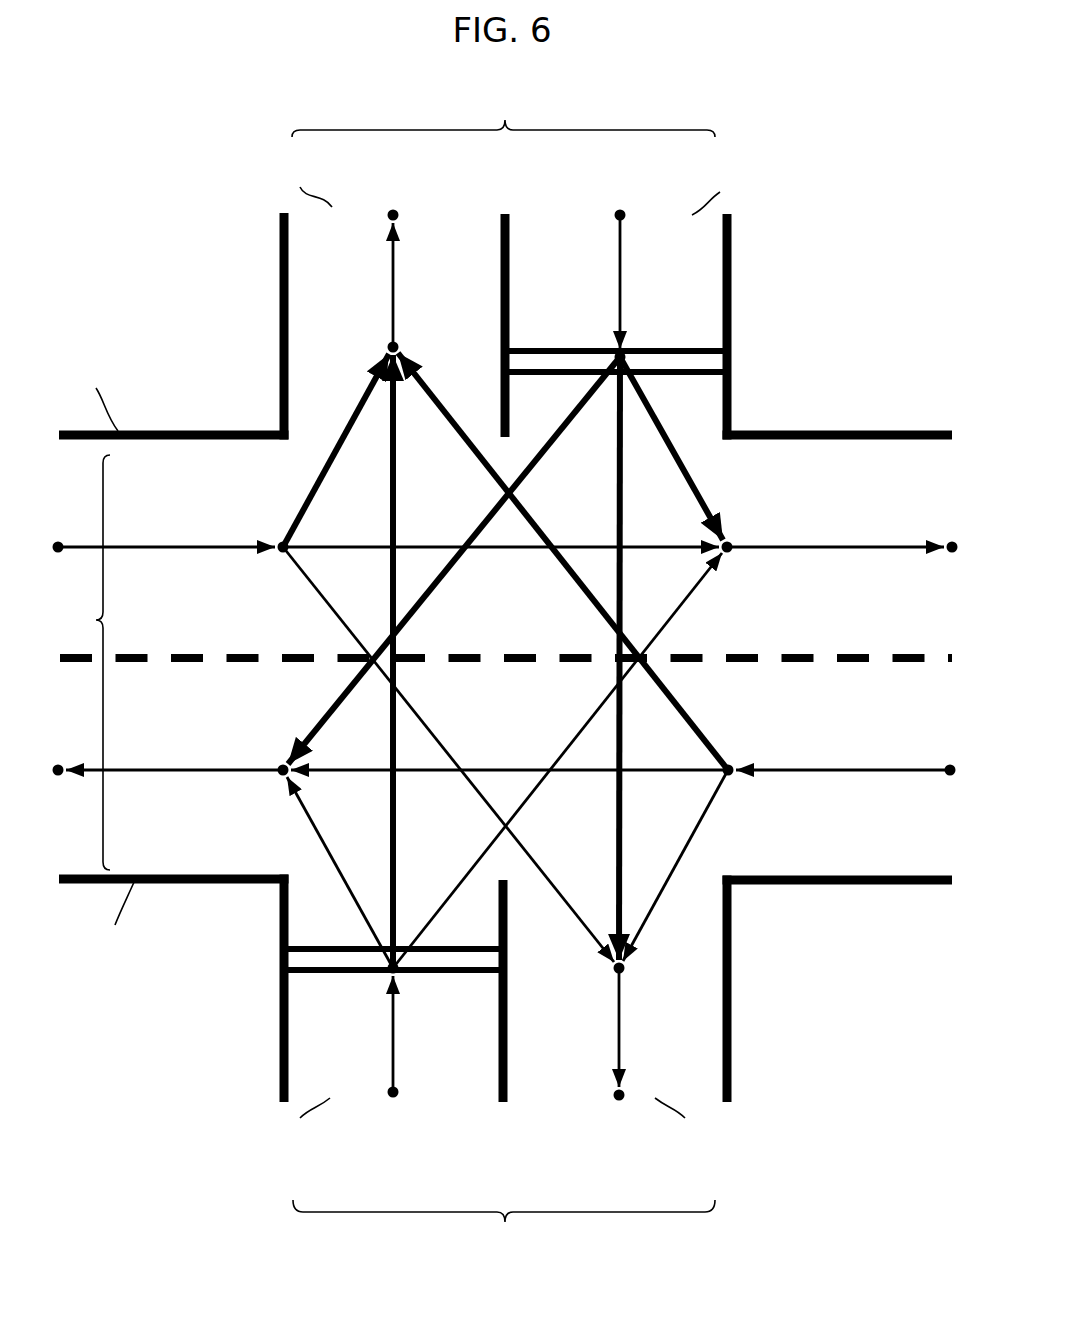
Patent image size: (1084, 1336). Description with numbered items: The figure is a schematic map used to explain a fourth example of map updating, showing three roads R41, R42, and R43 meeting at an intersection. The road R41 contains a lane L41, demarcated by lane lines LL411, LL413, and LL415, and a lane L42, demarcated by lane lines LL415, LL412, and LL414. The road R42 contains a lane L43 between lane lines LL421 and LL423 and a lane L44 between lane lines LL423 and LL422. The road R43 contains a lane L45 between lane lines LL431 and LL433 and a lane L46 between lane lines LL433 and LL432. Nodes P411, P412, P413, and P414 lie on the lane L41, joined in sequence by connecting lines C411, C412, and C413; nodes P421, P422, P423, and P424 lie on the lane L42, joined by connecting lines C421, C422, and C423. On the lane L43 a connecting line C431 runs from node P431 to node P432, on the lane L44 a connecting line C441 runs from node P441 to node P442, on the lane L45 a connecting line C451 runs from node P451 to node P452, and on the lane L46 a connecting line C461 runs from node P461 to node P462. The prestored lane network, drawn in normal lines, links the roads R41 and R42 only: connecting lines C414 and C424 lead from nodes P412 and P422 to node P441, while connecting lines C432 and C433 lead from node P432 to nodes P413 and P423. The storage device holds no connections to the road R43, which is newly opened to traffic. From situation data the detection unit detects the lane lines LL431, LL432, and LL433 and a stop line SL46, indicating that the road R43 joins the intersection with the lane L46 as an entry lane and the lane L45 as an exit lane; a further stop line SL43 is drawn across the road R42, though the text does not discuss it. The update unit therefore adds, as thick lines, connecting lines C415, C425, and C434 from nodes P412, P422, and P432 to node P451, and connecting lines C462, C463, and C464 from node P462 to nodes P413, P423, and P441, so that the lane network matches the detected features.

The road R41 is at (79, 662).
The road R42 is at (504, 1231).
The road R43 is at (503, 111).
The lane L41 is at (96, 397).
The lane L42 is at (113, 916).
The lane L43 is at (297, 1120).
The lane L44 is at (687, 1121).
The lane L45 is at (299, 185).
The lane L46 is at (723, 191).
The lane line LL411 is at (225, 431).
The lane line LL412 is at (236, 884).
The lane line LL413 is at (757, 431).
The lane line LL414 is at (765, 885).
The lane line LL415 is at (850, 661).
The lane line LL421 is at (280, 1050).
The lane line LL422 is at (732, 1045).
The lane line LL423 is at (505, 1102).
The lane line LL431 is at (279, 305).
The lane line LL432 is at (731, 292).
The lane line LL433 is at (508, 213).
The stop line SL43 is at (310, 947).
The stop line SL46 is at (530, 350).
The node P411 is at (60, 541).
The node P412 is at (279, 541).
The node P413 is at (732, 541).
The node P414 is at (947, 541).
The node P421 is at (944, 766).
The node P422 is at (729, 762).
The node P423 is at (276, 764).
The node P424 is at (62, 764).
The node P431 is at (390, 1100).
The node P432 is at (404, 965).
The node P441 is at (627, 966).
The node P442 is at (612, 1090).
The node P451 is at (388, 341).
The node P452 is at (400, 211).
The node P461 is at (626, 212).
The node P462 is at (626, 355).
The connecting line C411 is at (150, 544).
The connecting line C412 is at (326, 544).
The connecting line C413 is at (828, 544).
The connecting line C414 is at (310, 586).
The connecting line C415 is at (313, 486).
The connecting line C421 is at (794, 767).
The connecting line C422 is at (330, 767).
The connecting line C423 is at (120, 767).
The connecting line C424 is at (688, 838).
The connecting line C425 is at (485, 470).
The connecting line C431 is at (400, 1060).
The connecting line C432 is at (480, 876).
The connecting line C433 is at (294, 814).
The connecting line C434 is at (390, 822).
The connecting line C441 is at (625, 1070).
The connecting line C451 is at (400, 318).
The connecting line C461 is at (624, 305).
The connecting line C462 is at (686, 478).
The connecting line C463 is at (440, 584).
The connecting line C464 is at (616, 515).